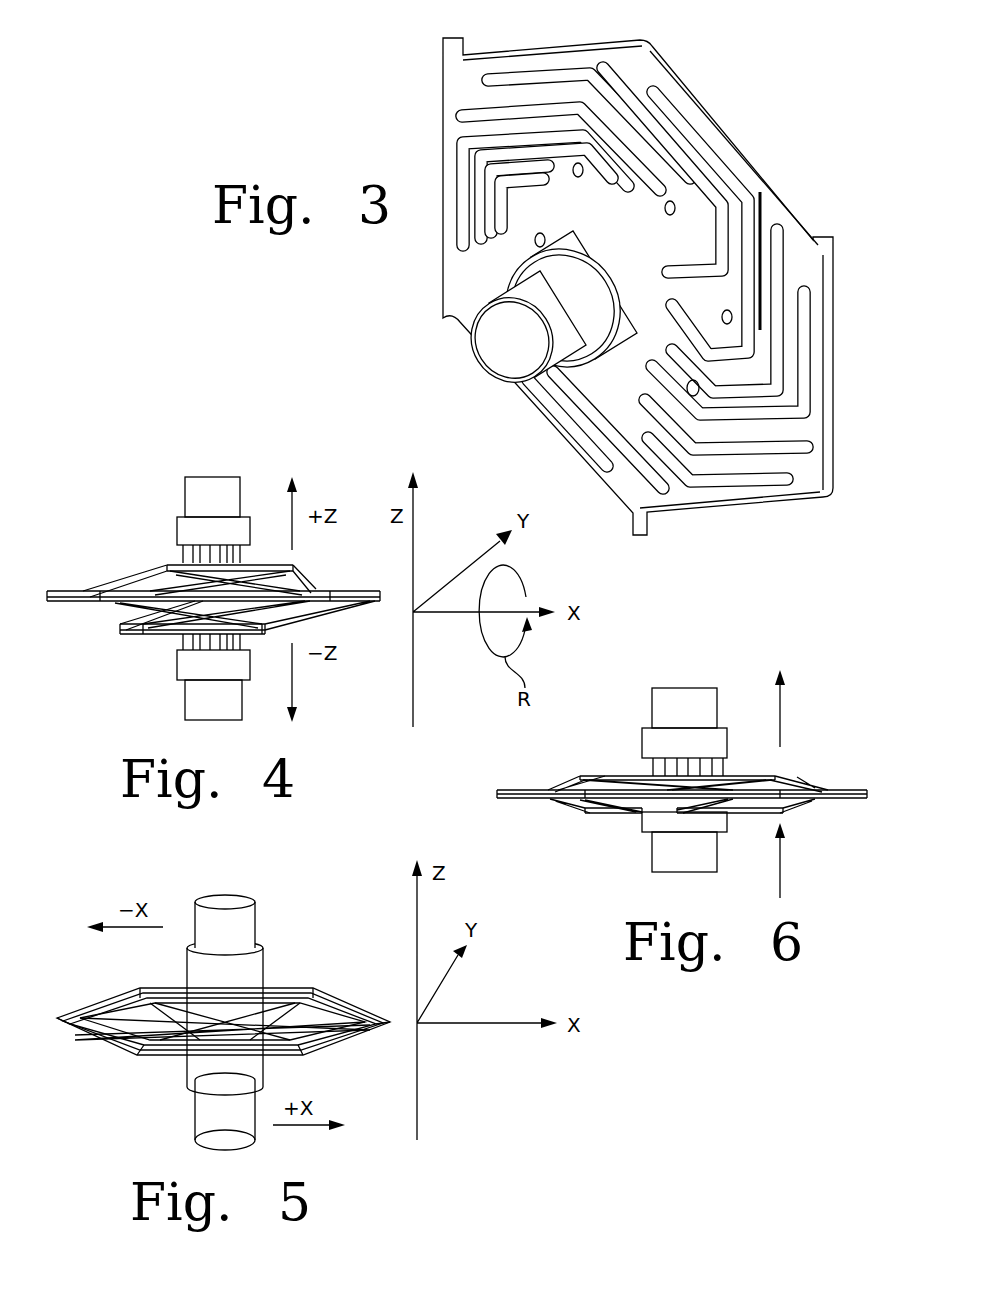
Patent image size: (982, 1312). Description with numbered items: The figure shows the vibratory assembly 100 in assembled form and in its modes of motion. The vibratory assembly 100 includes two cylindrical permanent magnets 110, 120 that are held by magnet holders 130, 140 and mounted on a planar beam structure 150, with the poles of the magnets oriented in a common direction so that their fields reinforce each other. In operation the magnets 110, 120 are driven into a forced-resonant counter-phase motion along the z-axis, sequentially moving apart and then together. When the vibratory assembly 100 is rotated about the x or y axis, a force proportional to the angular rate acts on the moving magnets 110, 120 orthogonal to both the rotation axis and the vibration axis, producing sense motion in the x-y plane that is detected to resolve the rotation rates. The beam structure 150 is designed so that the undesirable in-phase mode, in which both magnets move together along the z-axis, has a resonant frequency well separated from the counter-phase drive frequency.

In FIG. 3, the vibratory assembly 100 is at (638, 269).
In FIG. 3, the cylindrical permanent magnet 110 is at (585, 322).
In FIG. 4, the cylindrical permanent magnet 110 is at (192, 497).
In FIG. 6, the cylindrical permanent magnet 110 is at (680, 692).
In FIG. 5, the cylindrical permanent magnet 110 is at (243, 923).
In FIG. 4, the cylindrical permanent magnet 120 is at (198, 705).
In FIG. 6, the cylindrical permanent magnet 120 is at (668, 857).
In FIG. 5, the cylindrical permanent magnet 120 is at (203, 1118).
In FIG. 3, the magnet holder 130 is at (627, 274).
In FIG. 4, the magnet holder 130 is at (185, 530).
In FIG. 6, the magnet holder 130 is at (684, 752).
In FIG. 5, the magnet holder 130 is at (225, 1018).
In FIG. 4, the magnet holder 140 is at (187, 656).
In FIG. 6, the magnet holder 140 is at (684, 822).
In FIG. 3, the planar beam structure 150 is at (745, 158).
In FIG. 4, the planar beam structure 150 is at (52, 600).
In FIG. 6, the planar beam structure 150 is at (682, 794).
In FIG. 5, the planar beam structure 150 is at (223, 1021).